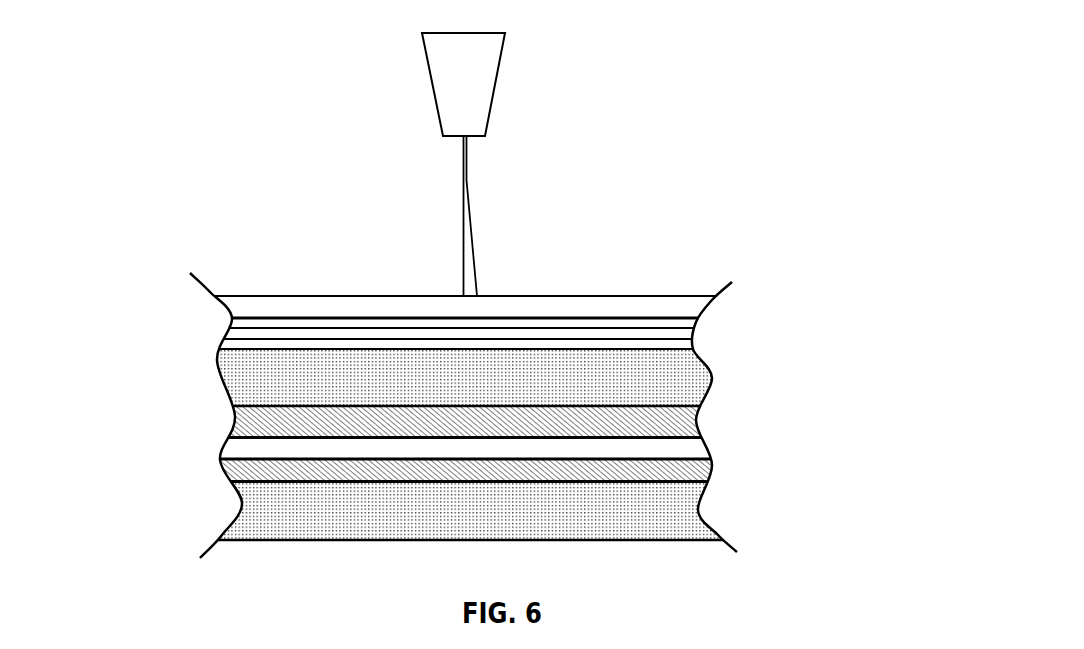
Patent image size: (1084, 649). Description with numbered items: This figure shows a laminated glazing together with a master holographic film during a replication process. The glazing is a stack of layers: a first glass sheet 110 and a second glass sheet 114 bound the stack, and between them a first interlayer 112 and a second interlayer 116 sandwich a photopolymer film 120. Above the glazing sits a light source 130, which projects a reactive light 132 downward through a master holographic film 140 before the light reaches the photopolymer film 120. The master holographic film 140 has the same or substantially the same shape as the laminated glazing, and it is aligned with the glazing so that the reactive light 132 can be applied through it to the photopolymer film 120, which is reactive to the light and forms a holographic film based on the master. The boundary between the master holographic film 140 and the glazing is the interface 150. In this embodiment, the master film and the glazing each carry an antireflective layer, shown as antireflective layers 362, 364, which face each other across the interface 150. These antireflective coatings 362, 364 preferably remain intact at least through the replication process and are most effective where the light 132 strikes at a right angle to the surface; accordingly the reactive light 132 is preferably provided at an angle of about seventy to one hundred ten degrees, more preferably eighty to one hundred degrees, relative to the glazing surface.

The first glass sheet 110 is at (263, 512).
The first interlayer 112 is at (693, 470).
The second glass sheet 114 is at (243, 378).
The second interlayer 116 is at (252, 422).
The photopolymer film 120 is at (235, 447).
The light source 130 is at (463, 83).
The reactive light 132 is at (463, 257).
The master holographic film 140 is at (580, 308).
The interface 150 is at (685, 333).
The antireflective layer 362 is at (693, 345).
The antireflective layer 364 is at (697, 320).